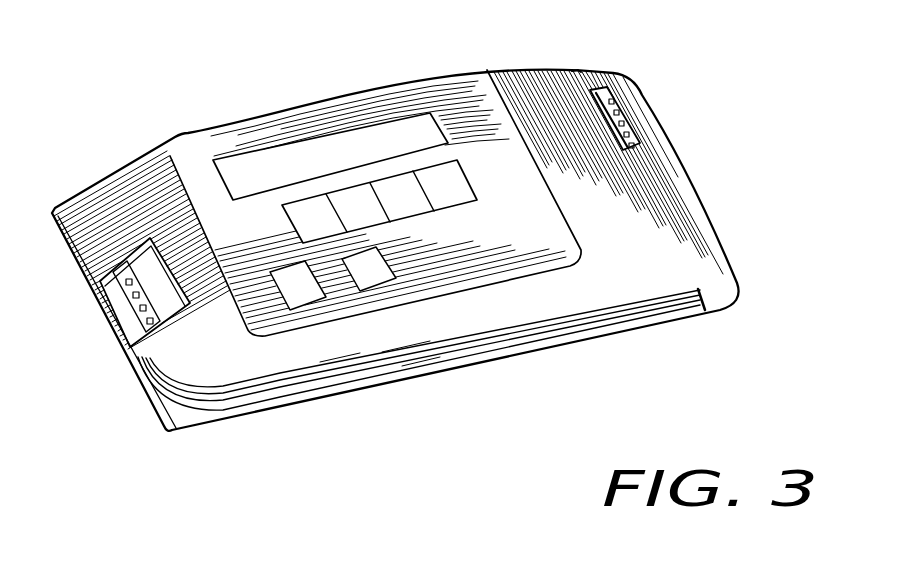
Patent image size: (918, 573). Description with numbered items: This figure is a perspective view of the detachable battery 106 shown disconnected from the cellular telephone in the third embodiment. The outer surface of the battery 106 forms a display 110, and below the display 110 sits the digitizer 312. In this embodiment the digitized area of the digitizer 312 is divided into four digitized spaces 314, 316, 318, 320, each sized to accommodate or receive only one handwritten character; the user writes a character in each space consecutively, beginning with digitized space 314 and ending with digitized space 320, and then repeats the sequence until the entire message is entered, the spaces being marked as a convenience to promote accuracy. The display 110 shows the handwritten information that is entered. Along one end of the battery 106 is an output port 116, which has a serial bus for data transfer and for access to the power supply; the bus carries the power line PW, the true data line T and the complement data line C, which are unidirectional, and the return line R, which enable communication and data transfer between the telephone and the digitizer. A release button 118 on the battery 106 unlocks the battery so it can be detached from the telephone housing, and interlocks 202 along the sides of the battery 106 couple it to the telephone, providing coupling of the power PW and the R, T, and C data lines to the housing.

The detachable battery 106 is at (808, 407).
The display 110 is at (267, 143).
The output port 116 is at (669, 105).
The release button 118 is at (140, 283).
The interlocks 202 is at (205, 438).
The digitizer 312 is at (467, 173).
The digitized space 314 is at (308, 243).
The digitized space 316 is at (352, 236).
The digitized space 318 is at (396, 226).
The digitized space 320 is at (443, 214).
The power line PW is at (617, 100).
The return line R is at (622, 118).
The true data line T is at (628, 136).
The complement data line C is at (637, 147).